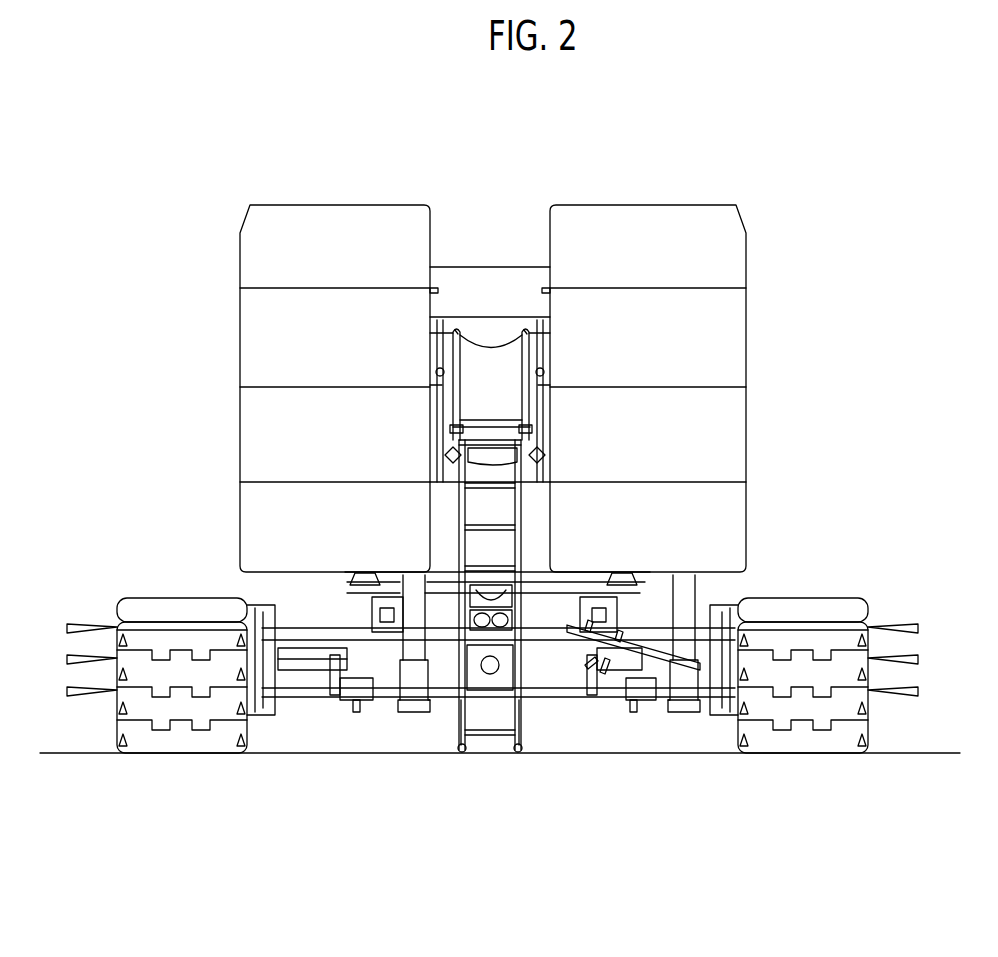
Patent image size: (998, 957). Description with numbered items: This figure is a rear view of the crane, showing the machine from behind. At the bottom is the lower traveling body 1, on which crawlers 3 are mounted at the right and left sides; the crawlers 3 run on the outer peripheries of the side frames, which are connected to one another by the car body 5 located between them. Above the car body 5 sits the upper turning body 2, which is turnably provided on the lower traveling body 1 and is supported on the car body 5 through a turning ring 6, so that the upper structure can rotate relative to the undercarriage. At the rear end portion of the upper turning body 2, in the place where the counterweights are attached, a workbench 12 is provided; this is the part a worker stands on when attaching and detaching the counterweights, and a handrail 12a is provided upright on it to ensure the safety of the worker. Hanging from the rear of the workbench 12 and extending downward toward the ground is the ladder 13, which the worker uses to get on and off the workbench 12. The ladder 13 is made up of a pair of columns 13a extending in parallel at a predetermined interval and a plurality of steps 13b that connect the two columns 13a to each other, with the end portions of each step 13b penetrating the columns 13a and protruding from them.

The lower traveling body 1 is at (872, 588).
The upper turning body 2 is at (665, 195).
The crawler 3 is at (182, 715).
The car body 5 is at (385, 702).
The turning ring 6 is at (557, 577).
The workbench 12 is at (502, 437).
The handrail 12a is at (455, 336).
The ladder 13 is at (524, 512).
The column 13a is at (460, 714).
The step 13b is at (484, 735).